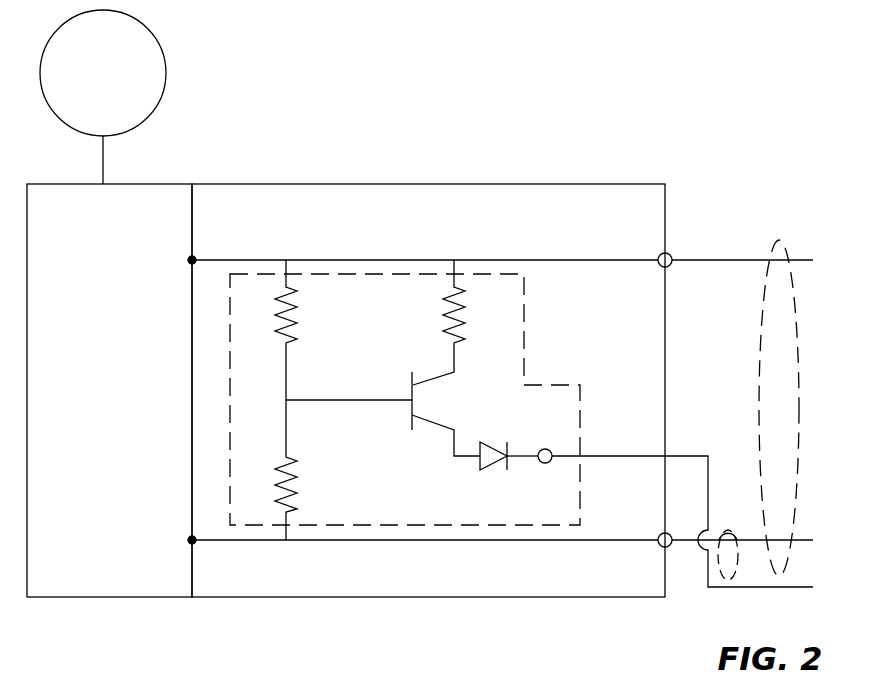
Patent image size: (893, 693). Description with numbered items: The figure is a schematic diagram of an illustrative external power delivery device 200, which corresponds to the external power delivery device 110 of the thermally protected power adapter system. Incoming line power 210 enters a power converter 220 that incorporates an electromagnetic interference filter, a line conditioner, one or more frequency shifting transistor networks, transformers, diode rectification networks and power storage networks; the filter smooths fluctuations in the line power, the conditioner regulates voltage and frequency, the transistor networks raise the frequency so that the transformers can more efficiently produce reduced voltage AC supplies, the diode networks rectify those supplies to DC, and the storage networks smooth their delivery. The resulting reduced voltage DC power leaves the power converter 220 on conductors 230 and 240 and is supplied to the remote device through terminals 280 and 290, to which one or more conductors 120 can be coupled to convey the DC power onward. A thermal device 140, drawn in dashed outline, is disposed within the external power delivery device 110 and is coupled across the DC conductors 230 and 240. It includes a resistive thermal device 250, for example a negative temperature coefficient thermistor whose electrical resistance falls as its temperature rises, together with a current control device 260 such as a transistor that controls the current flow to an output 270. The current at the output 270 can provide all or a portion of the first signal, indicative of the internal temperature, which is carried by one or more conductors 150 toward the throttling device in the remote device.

The external power delivery device 200 is at (606, 112).
The external power delivery device 110 is at (554, 183).
The conductors 120 is at (779, 244).
The thermal device 140 is at (527, 344).
The conductors 150 is at (723, 590).
The line power 210 is at (84, 108).
The power converter 220 is at (131, 446).
The conductor 230 is at (216, 260).
The conductor 240 is at (216, 540).
The resistive thermal device 250 is at (311, 470).
The current control device 260 is at (411, 383).
The output 270 is at (545, 448).
The terminal 280 is at (664, 253).
The terminal 290 is at (664, 533).